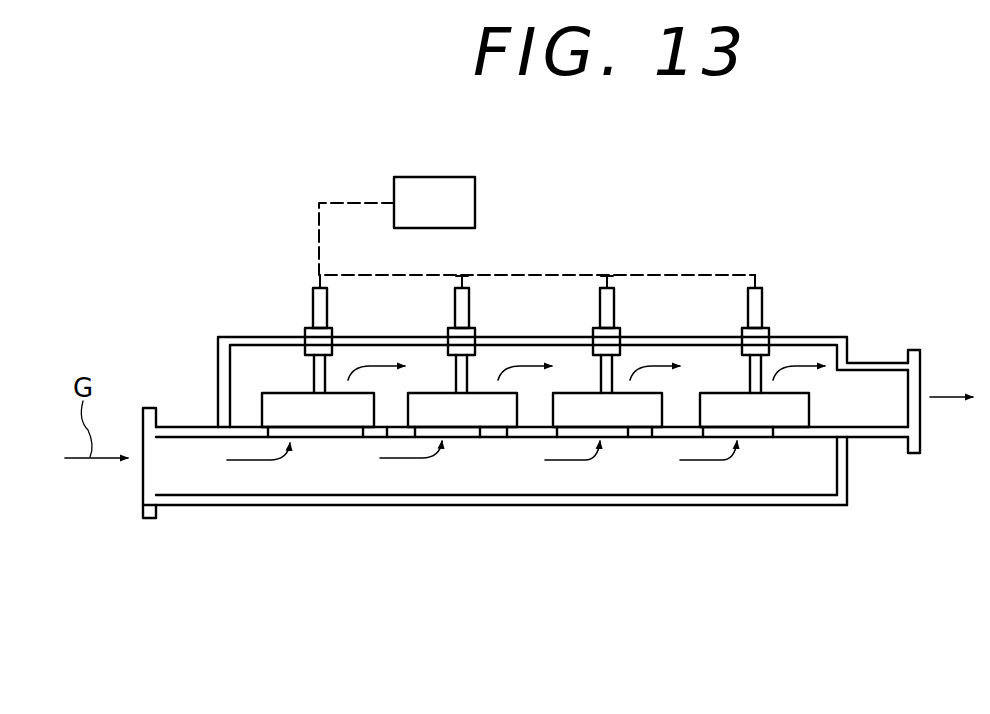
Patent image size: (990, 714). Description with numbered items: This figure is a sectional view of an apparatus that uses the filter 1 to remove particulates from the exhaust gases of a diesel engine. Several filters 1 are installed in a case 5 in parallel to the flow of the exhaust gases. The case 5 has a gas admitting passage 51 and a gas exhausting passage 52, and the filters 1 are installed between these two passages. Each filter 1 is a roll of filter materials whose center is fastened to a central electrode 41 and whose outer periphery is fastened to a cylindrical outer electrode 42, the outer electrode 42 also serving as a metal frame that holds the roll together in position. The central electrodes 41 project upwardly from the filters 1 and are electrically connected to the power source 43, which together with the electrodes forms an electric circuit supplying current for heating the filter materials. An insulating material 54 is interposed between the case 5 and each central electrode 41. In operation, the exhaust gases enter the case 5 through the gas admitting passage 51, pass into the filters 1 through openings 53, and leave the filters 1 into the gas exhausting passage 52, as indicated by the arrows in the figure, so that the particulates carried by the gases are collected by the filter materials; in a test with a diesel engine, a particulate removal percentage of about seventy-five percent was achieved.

The filter 1 is at (473, 424).
The case 5 is at (271, 336).
The central electrode 41 is at (465, 310).
The outer electrode 42 is at (403, 414).
The power source 43 is at (468, 195).
The gas admitting passage 51 is at (175, 506).
The gas exhausting passage 52 is at (882, 438).
The openings 53 is at (332, 434).
The insulating material 54 is at (758, 343).